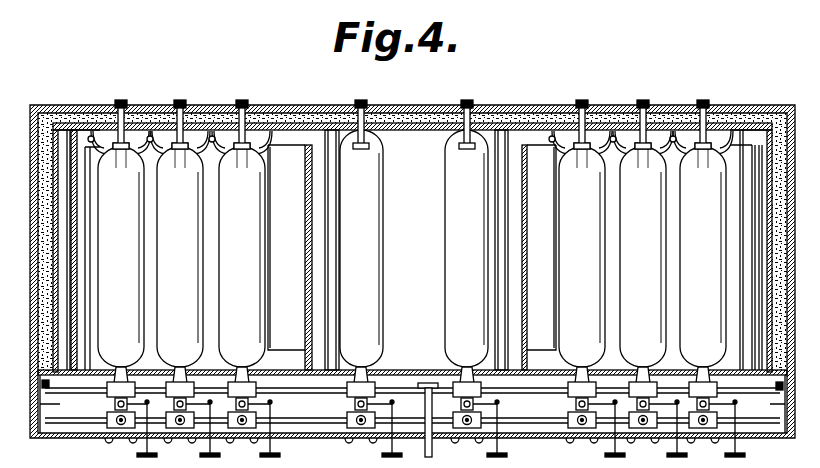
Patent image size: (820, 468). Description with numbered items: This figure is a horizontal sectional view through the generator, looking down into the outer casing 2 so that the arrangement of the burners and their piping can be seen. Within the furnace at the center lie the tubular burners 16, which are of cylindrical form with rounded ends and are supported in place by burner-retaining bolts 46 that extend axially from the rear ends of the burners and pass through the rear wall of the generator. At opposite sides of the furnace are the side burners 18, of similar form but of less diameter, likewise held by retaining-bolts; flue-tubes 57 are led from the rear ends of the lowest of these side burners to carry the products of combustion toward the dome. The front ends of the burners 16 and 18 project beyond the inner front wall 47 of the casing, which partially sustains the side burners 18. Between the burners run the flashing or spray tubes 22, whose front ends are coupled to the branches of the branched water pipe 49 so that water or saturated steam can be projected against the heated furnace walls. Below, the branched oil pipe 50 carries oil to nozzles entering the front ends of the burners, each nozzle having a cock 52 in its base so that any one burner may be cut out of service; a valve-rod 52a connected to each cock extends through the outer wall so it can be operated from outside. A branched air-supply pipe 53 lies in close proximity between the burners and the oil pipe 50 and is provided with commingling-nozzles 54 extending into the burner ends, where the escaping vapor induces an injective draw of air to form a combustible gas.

The outer casing 2 is at (74, 106).
The tubular burners 16 is at (448, 246).
The side burners 18 is at (99, 230).
The flashing or spray tubes 22 is at (304, 258).
The burner-retaining bolts 46 is at (124, 101).
The inner front wall 47 is at (92, 372).
The branched water pipe 49 is at (428, 382).
The branched oil pipe 50 is at (310, 422).
The cock 52 is at (112, 404).
The valve-rod 52a is at (738, 406).
The branched air-supply pipe 53 is at (160, 382).
The commingling-nozzles 54 is at (116, 384).
The flue-tubes 57 is at (134, 152).